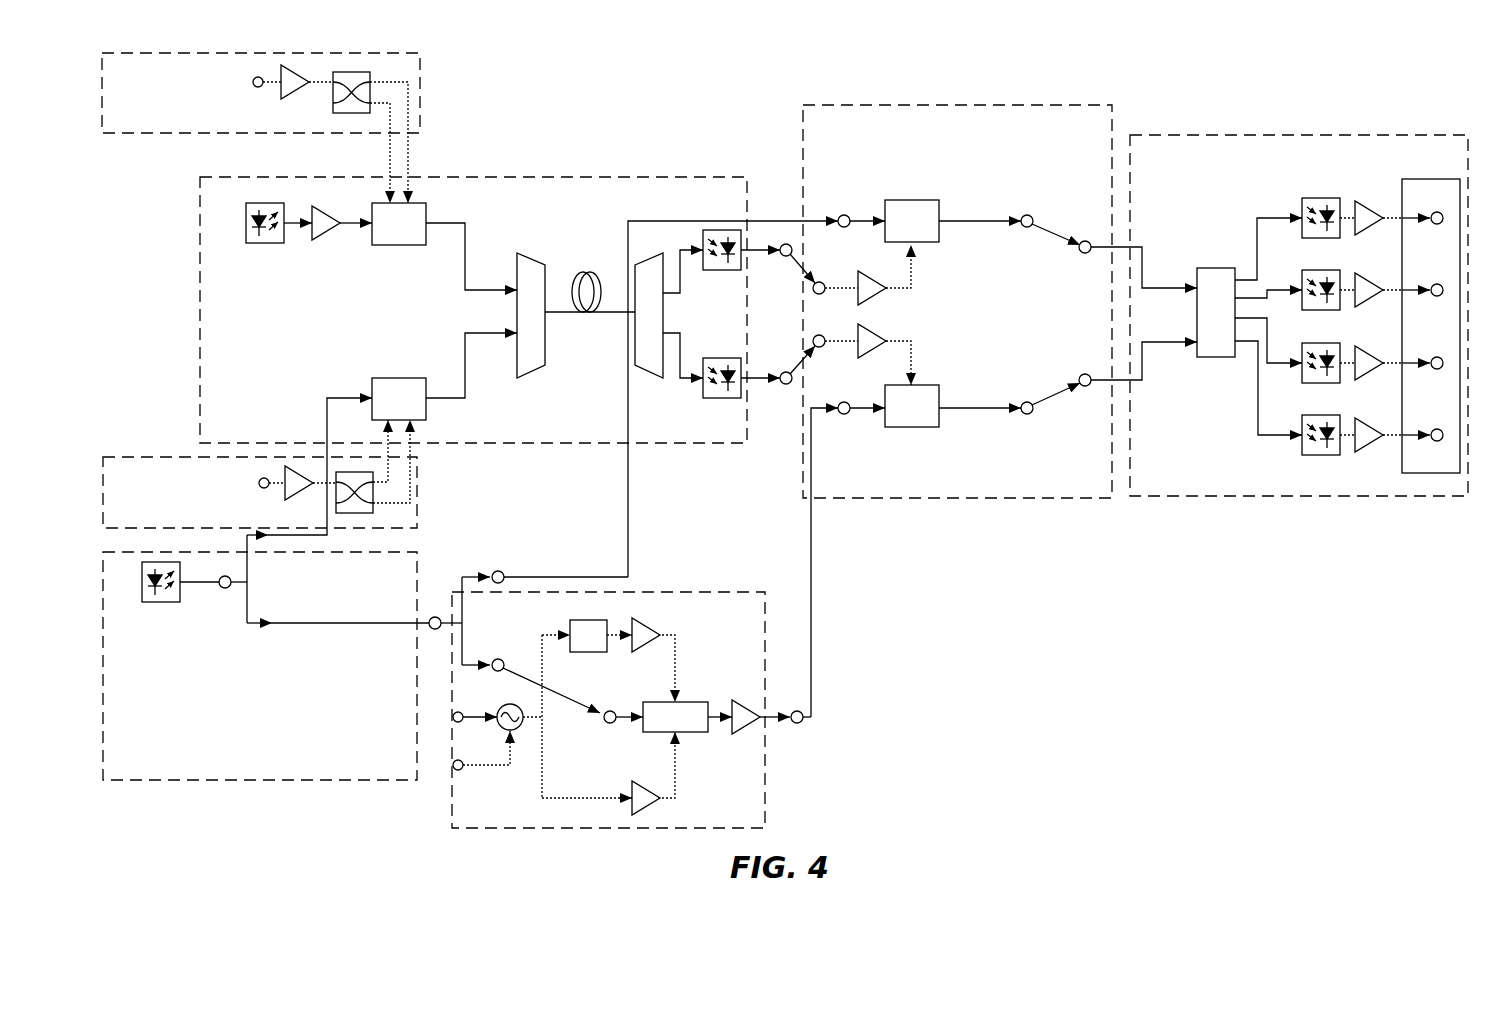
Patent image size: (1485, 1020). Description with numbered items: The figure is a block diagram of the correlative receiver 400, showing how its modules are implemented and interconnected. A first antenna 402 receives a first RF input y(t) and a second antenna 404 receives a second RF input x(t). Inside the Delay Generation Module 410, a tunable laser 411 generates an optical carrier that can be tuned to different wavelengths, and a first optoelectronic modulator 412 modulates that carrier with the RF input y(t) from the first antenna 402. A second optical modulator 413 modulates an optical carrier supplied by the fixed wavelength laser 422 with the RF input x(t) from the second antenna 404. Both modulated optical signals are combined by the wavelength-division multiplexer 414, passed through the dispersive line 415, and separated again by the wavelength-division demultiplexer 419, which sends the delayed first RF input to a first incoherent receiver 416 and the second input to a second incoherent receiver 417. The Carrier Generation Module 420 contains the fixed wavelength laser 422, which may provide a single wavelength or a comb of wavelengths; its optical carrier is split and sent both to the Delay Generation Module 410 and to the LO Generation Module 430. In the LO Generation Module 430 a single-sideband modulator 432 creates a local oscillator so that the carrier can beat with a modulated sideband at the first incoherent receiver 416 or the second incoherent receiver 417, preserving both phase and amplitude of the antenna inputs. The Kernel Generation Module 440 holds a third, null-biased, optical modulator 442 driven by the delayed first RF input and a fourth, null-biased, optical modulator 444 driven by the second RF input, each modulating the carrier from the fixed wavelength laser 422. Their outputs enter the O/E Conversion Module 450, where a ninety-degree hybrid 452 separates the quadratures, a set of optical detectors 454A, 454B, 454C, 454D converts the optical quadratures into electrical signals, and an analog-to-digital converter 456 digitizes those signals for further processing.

The correlative receiver 400 is at (160, 20).
The first antenna 402 is at (340, 53).
The second antenna 404 is at (160, 457).
The Delay Generation Module 410 is at (703, 177).
The tunable laser 411 is at (270, 243).
The first optoelectronic modulator 412 is at (420, 203).
The second optical modulator 413 is at (426, 412).
The wavelength-division multiplexer 414 is at (530, 378).
The dispersive line 415 is at (588, 272).
The first incoherent receiver 416 is at (701, 238).
The second incoherent receiver 417 is at (736, 358).
The wavelength-division demultiplexer 419 is at (648, 372).
The Carrier Generation Module 420 is at (320, 780).
The fixed wavelength laser 422 is at (175, 602).
The Local Oscillator (LO) Generation Module 430 is at (690, 592).
The single-sideband modulator 432 is at (690, 702).
The Kernel Generation Module 440 is at (1040, 105).
The third, null-biased, optical modulator 442 is at (932, 242).
The fourth, null-biased, optical modulator 444 is at (932, 385).
The O/E Conversion Module 450 is at (1380, 135).
The 90-degree hybrid 452 is at (1220, 268).
The optical detector 454A is at (1322, 198).
The optical detector 454B is at (1322, 270).
The optical detector 454C is at (1322, 343).
The optical detector 454D is at (1322, 415).
The analog-to-digital converter (ADC) 456 is at (1408, 179).